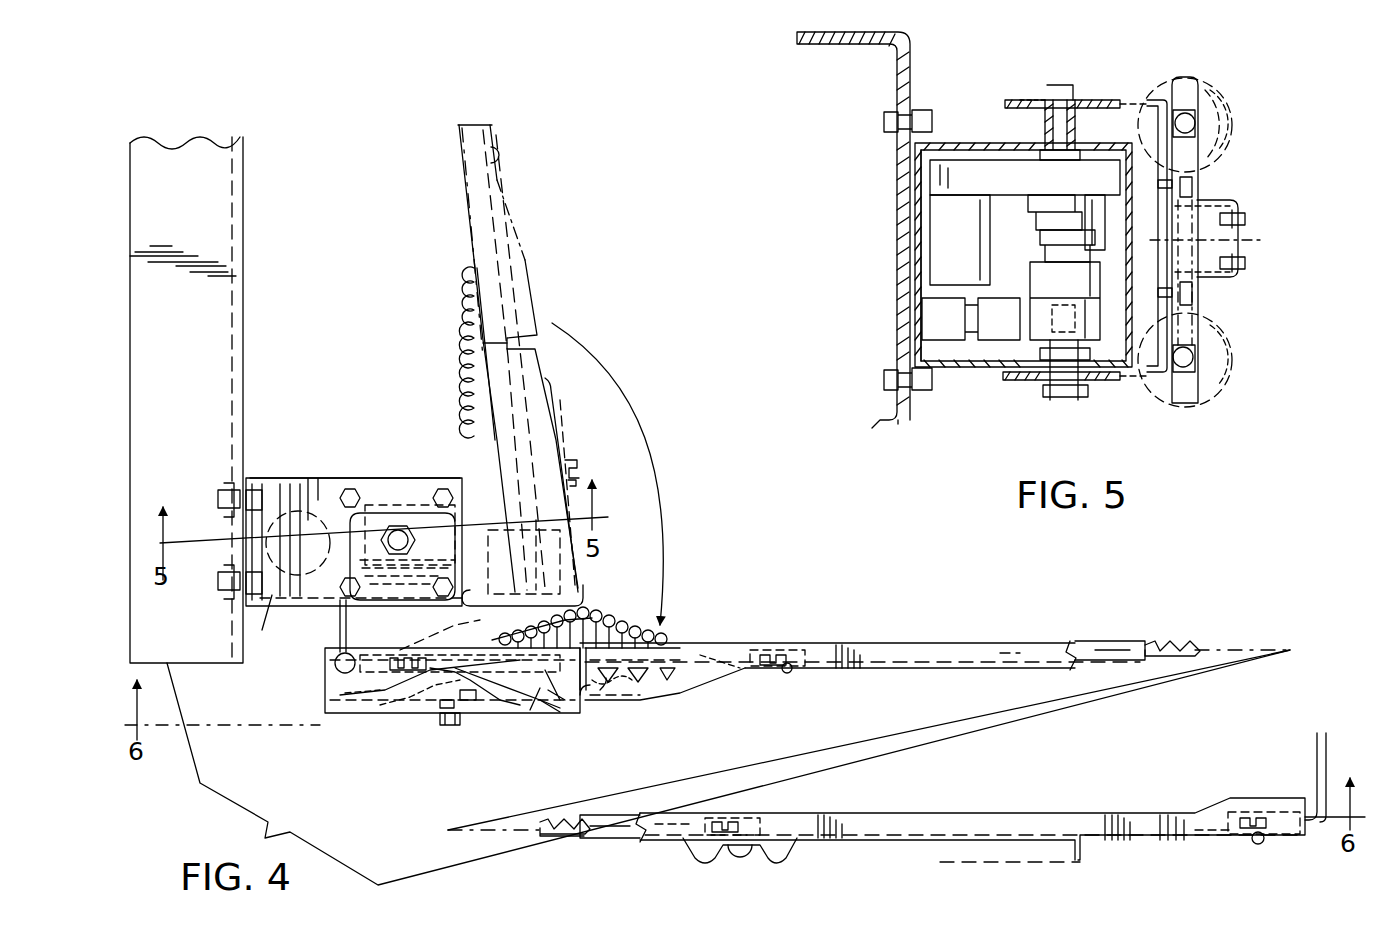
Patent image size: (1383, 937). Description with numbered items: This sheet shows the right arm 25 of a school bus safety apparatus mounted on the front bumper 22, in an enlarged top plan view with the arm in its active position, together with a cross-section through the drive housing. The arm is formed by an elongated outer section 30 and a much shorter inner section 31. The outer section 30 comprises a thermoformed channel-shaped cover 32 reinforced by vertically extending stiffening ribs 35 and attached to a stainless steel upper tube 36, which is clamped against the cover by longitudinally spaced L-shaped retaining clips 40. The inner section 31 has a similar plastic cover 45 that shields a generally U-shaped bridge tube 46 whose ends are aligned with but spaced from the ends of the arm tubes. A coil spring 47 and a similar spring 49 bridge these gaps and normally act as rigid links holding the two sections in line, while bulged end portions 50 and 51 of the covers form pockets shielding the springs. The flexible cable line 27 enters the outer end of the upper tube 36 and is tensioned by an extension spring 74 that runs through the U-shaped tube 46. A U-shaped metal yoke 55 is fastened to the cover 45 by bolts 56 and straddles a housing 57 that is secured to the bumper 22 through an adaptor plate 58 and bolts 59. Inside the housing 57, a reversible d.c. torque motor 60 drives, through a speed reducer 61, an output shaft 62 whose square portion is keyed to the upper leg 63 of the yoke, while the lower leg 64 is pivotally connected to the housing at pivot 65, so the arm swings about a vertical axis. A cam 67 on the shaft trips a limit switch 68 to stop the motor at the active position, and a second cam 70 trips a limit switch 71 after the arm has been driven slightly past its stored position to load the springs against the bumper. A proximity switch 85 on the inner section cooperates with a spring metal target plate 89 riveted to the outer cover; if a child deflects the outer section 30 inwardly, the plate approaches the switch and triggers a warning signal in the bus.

In FIG. 4, the front bumper 22 is at (218, 330).
In FIG. 5, the front bumper 22 is at (912, 52).
In FIG. 4, the right arm 25 is at (965, 680).
In FIG. 5, the right arm 25 is at (1240, 134).
In FIG. 4, the flexible line 27 is at (1312, 764).
In FIG. 4, the outer section 30 is at (502, 182).
In FIG. 4, the inner section 31 is at (562, 425).
In FIG. 5, the inner section 31 is at (1237, 198).
In FIG. 4, the channel-shaped cover 32 is at (930, 642).
In FIG. 4, the stiffening ribs 35 is at (740, 862).
In FIG. 4, the upper tube 36 is at (1095, 641).
In FIG. 4, the retaining clips 40 is at (802, 642).
In FIG. 4, the cover 45 is at (420, 730).
In FIG. 4, the U-shaped guide or bridge tube 46 is at (548, 728).
In FIG. 5, the coil spring 47 is at (1228, 347).
In FIG. 4, the spring 49 is at (610, 621).
In FIG. 5, the spring 49 is at (1218, 97).
In FIG. 4, the bulged end portion of cover 50 is at (640, 700).
In FIG. 4, the bulged end portion of cover 51 is at (575, 715).
In FIG. 4, the yoke 55 is at (352, 622).
In FIG. 5, the yoke 55 is at (1113, 97).
In FIG. 4, the bolts 56 is at (447, 631).
In FIG. 5, the bolts 56 is at (1192, 190).
In FIG. 4, the housing 57 is at (320, 498).
In FIG. 5, the housing 57 is at (976, 142).
In FIG. 5, the adaptor plate 58 is at (920, 250).
In FIG. 5, the bolts 59 is at (932, 122).
In FIG. 4, the reversible d.c. torque motor 60 is at (296, 576).
In FIG. 5, the reversible d.c. torque motor 60 is at (935, 225).
In FIG. 5, the speed reducer 61 is at (930, 168).
In FIG. 4, the output shaft 62 is at (398, 528).
In FIG. 5, the output shaft 62 is at (1060, 100).
In FIG. 5, the upper leg of yoke 63 is at (1028, 100).
In FIG. 5, the lower leg of yoke 64 is at (1022, 380).
In FIG. 5, the pivot 65 is at (1090, 390).
In FIG. 5, the cam 67 is at (1042, 246).
In FIG. 5, the limit switch 68 is at (1095, 258).
In FIG. 5, the cam 70 is at (1040, 195).
In FIG. 5, the limit switch 71 is at (1095, 195).
In FIG. 4, the extension spring 74 is at (1174, 643).
In FIG. 4, the proximity switch 85 is at (495, 730).
In FIG. 4, the spring metal plate 89 is at (505, 642).